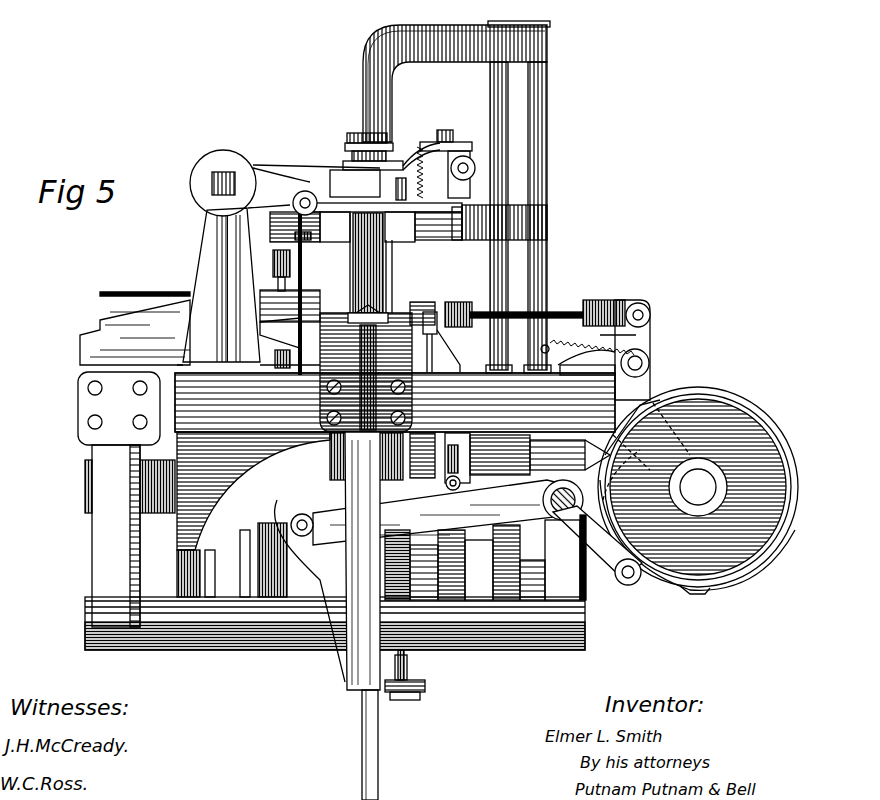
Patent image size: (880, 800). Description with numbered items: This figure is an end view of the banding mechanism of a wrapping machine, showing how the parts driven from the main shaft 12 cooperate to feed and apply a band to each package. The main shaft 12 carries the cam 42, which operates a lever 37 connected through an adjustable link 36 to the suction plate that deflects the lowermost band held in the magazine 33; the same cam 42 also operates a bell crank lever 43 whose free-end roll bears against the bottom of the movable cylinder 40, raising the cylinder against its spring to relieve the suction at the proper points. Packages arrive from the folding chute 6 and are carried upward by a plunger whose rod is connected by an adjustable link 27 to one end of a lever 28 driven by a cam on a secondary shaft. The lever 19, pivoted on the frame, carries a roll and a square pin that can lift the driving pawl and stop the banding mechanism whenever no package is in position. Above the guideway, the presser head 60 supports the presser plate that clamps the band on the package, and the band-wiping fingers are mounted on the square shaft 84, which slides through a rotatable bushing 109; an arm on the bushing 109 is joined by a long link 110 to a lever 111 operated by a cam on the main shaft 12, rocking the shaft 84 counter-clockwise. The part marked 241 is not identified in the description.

The folding chute 6 is at (132, 293).
The main shaft 12 is at (703, 488).
The lever 19 is at (642, 344).
The adjustable link 27 is at (395, 690).
The lever 28 is at (427, 683).
The magazine 33 is at (384, 276).
The adjustable link 36 is at (440, 344).
The lever 37 is at (497, 480).
The movable cylinder 40 is at (348, 452).
The cam 42 is at (732, 576).
The bell crank lever 43 is at (610, 565).
The presser head 60 is at (378, 89).
The square shaft 84 is at (227, 172).
The bushing 109 is at (205, 203).
The long link 110 is at (273, 280).
The lever 111 is at (347, 528).
The rod 241 is at (567, 312).